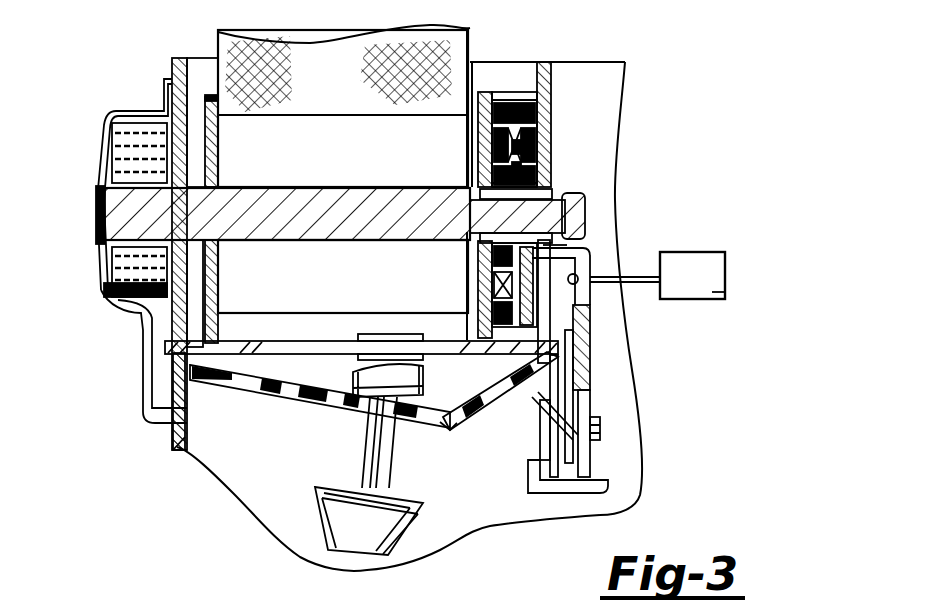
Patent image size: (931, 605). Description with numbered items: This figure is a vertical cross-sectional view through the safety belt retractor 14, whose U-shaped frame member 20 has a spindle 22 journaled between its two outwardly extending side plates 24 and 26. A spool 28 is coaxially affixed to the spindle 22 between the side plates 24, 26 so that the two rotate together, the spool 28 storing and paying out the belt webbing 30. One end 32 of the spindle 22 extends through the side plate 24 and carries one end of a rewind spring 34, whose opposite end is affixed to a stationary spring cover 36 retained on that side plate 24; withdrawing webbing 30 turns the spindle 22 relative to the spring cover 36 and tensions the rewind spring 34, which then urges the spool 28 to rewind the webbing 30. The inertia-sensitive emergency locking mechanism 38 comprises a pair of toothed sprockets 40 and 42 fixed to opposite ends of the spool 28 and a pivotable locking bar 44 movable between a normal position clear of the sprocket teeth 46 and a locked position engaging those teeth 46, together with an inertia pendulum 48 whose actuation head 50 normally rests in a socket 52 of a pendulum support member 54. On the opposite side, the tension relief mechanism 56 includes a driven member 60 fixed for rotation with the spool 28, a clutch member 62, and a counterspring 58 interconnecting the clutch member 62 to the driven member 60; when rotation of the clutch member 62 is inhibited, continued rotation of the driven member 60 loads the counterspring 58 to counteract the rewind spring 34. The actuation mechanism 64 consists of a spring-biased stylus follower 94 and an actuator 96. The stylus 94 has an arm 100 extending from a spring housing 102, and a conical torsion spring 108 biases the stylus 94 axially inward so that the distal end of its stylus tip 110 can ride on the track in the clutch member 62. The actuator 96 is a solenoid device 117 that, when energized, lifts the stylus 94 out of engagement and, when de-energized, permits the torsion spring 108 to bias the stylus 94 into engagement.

The safety belt retractor 14 is at (640, 116).
The U-shaped frame member 20 is at (540, 100).
The spindle 22 is at (320, 210).
The side plate 24 is at (172, 60).
The side plate 26 is at (553, 97).
The spool 28 is at (270, 165).
The belt webbing 30 is at (471, 38).
The end of spindle 32 is at (135, 208).
The rewind spring 34 is at (106, 287).
The spring cover 36 is at (136, 325).
The emergency locking mechanism 38 is at (307, 513).
The toothed sprocket 40 is at (220, 280).
The toothed sprocket 42 is at (485, 132).
The locking bar 44 is at (247, 355).
The sprocket teeth 46 is at (520, 92).
The inertia pendulum 48 is at (417, 527).
The actuation head 50 is at (348, 400).
The socket 52 is at (443, 430).
The pendulum support member 54 is at (278, 398).
The tension relief mechanism 56 is at (555, 110).
The counterspring 58 is at (550, 146).
The driven member 60 is at (545, 172).
The clutch member 62 is at (555, 161).
The actuation mechanism 64 is at (683, 308).
The follower 94 is at (610, 377).
The actuator 96 is at (700, 270).
The arm 100 is at (592, 262).
The spring housing 102 is at (592, 328).
The conical torsion spring 108 is at (596, 446).
The stylus tip 110 is at (575, 243).
The solenoid device 117 is at (712, 292).